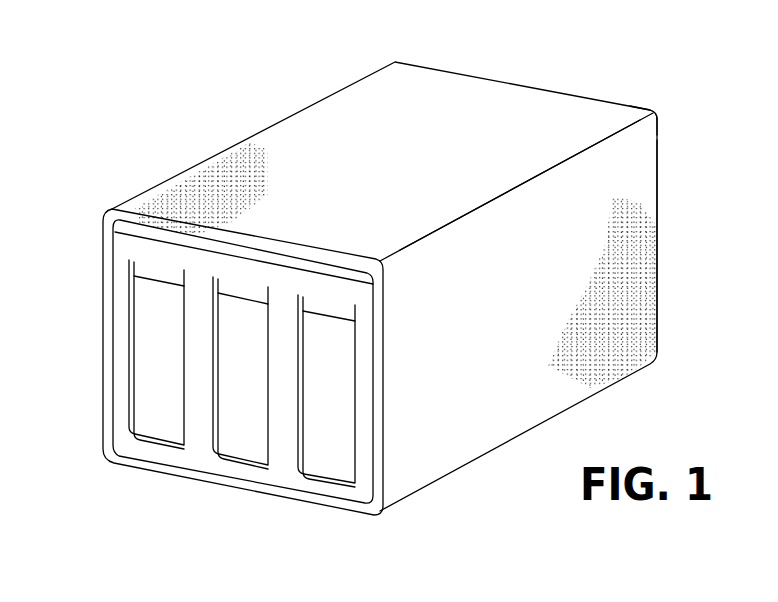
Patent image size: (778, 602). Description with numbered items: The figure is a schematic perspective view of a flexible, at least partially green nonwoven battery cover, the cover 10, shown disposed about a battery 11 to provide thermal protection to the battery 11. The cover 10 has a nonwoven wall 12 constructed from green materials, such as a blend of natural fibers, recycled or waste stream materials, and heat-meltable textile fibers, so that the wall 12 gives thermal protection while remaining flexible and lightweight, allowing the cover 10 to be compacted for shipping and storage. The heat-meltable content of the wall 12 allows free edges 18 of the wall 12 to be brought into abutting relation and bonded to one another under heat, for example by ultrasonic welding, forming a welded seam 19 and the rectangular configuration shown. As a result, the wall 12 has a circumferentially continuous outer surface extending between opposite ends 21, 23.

The cover 10 is at (161, 134).
The battery 11 is at (208, 318).
The nonwoven wall 12 is at (462, 413).
The free edges 18 is at (573, 158).
The welded seam 19 is at (638, 120).
The end 21 is at (282, 497).
The end 23 is at (660, 280).